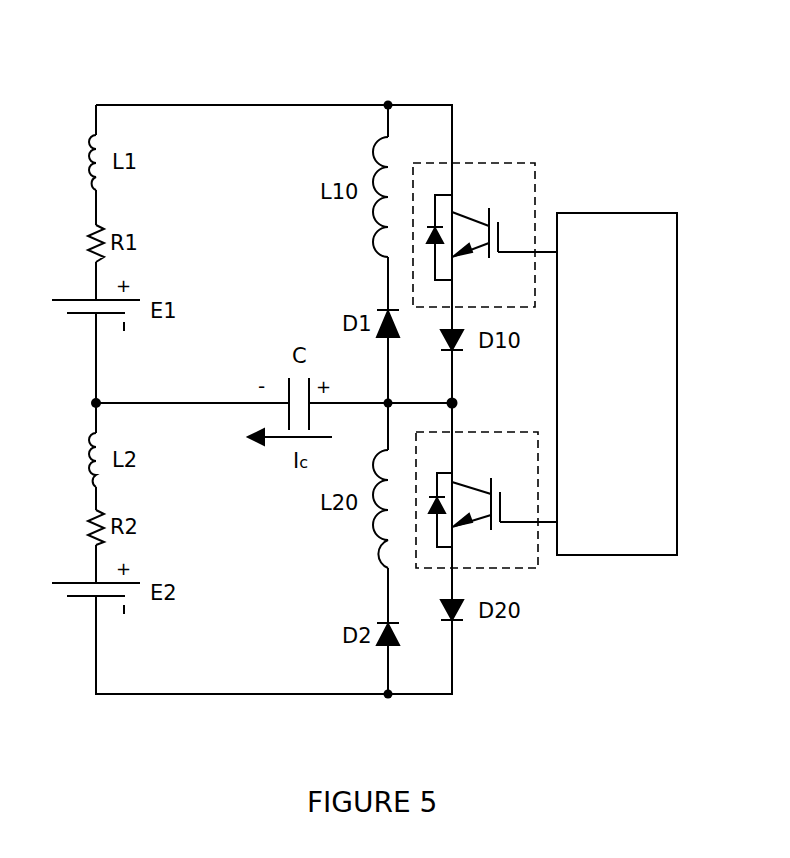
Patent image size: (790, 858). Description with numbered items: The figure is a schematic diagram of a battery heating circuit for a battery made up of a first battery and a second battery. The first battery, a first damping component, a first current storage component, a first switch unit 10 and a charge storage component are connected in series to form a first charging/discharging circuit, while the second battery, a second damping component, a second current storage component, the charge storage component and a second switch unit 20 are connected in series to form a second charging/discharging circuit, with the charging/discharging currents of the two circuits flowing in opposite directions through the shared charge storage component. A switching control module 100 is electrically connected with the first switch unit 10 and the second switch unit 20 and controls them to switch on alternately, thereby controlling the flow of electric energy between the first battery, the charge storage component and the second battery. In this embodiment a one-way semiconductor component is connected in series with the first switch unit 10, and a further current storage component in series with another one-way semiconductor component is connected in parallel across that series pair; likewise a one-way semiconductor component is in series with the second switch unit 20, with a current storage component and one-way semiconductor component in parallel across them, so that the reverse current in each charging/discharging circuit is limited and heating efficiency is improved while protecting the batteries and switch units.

The first switch unit 10 is at (516, 194).
The second switch unit 20 is at (521, 467).
The switching control module 100 is at (600, 438).